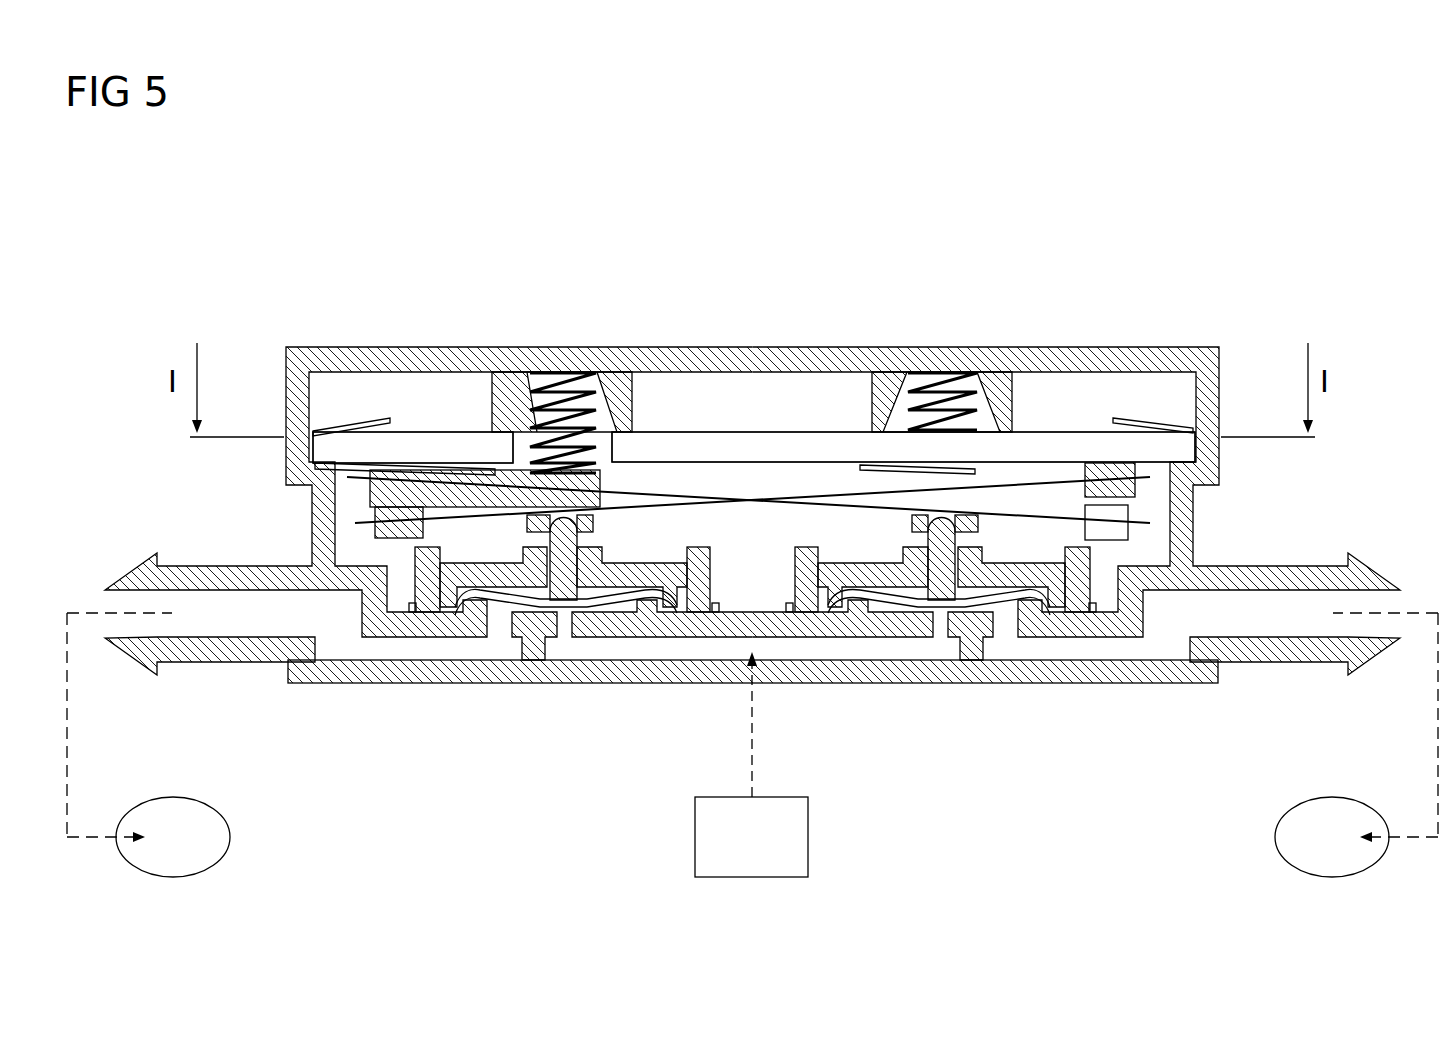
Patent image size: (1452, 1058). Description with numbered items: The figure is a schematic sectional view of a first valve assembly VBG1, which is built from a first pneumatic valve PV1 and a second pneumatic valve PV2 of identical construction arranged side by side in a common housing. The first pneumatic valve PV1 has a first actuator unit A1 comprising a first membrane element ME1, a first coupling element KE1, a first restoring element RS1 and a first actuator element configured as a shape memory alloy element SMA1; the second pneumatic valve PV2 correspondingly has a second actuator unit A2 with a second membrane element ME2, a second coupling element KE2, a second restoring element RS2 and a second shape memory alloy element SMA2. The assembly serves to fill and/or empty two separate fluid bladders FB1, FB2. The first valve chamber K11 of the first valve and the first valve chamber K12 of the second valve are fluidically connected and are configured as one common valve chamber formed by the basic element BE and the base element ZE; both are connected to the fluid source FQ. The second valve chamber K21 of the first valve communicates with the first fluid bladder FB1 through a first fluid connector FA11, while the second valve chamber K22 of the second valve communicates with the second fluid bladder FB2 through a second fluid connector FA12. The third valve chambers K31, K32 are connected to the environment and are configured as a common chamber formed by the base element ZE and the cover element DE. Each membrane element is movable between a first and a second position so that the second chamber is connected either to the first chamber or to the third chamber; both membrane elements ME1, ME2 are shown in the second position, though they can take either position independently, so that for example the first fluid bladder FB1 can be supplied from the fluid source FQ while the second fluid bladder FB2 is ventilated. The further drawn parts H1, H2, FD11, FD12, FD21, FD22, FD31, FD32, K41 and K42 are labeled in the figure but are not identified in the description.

The first valve assembly VBG1 is at (947, 183).
The first pneumatic valve PV1 is at (436, 249).
The second pneumatic valve PV2 is at (1067, 249).
The first holder H1 is at (402, 482).
The second holder H2 is at (1112, 478).
The first shape memory alloy element SMA1 is at (458, 512).
The second shape memory alloy element SMA2 is at (1037, 513).
The first restoring element RS1 is at (576, 430).
The second restoring element RS2 is at (1000, 425).
The first spring seat FD31 is at (625, 468).
The second spring seat FD32 is at (938, 566).
The third valve chamber of the first pneumatic valve K31 is at (803, 527).
The third valve chamber of the second pneumatic valve K32 is at (803, 527).
The cover element DE is at (1168, 362).
The first actuator unit A1 is at (363, 538).
The second actuator unit A2 is at (1143, 543).
The first coupling element KE1 is at (585, 560).
The second coupling element KE2 is at (935, 568).
The first fluid connector FA11 is at (213, 655).
The second fluid connector FA12 is at (1287, 652).
The second valve chamber of the first pneumatic valve K21 is at (340, 630).
The second valve chamber of the second pneumatic valve K22 is at (1167, 630).
The first membrane element ME1 is at (460, 612).
The second membrane element ME2 is at (1098, 632).
The first sealing element FD21 is at (498, 625).
The second sealing element FD22 is at (1006, 625).
The first fluid channel element FD11 is at (565, 640).
The second fluid channel element FD12 is at (940, 640).
The first valve chamber K41 is at (630, 605).
The second valve chamber K42 is at (1015, 610).
The first valve chamber of the first pneumatic valve K11 is at (717, 648).
The first valve chamber of the second pneumatic valve K12 is at (812, 648).
The base element ZE is at (782, 640).
The basic element BE is at (865, 672).
The fluid source FQ is at (808, 838).
The first fluid bladder FB1 is at (230, 837).
The second fluid bladder FB2 is at (1275, 837).